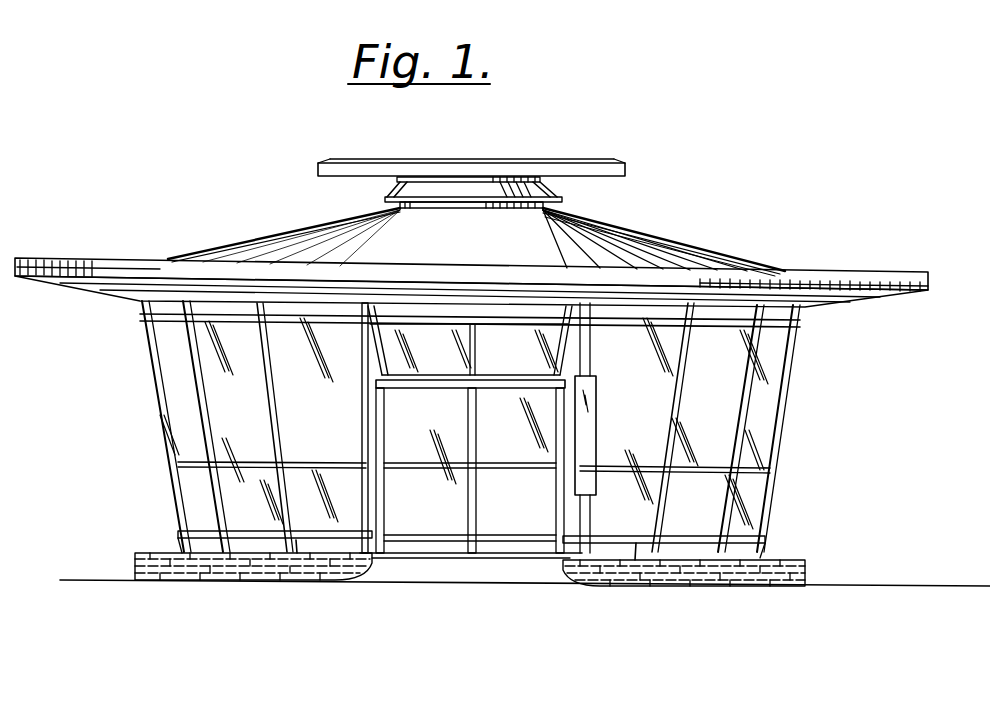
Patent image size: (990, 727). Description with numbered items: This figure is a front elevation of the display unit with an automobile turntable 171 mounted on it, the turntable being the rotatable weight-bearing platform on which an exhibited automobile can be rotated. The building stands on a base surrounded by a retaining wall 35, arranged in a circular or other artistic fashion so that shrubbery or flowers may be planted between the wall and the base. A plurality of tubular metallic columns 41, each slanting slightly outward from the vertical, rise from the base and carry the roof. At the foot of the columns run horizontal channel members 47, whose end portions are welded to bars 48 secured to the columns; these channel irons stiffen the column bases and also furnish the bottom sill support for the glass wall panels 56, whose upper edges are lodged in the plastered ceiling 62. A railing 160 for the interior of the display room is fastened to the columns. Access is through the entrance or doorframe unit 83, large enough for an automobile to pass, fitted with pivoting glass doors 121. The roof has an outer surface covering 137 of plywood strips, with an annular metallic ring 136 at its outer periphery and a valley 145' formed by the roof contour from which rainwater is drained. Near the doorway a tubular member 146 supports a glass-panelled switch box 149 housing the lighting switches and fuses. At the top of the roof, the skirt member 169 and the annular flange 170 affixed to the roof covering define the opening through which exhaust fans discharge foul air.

The retaining wall 35 is at (805, 567).
The tubular metallic column 41 is at (162, 373).
The horizontal channel member 47 is at (295, 553).
The bar 48 is at (180, 540).
The glass wall panel 56 is at (796, 428).
The plastered ceiling 62 is at (845, 303).
The entrance or doorframe unit 83 is at (467, 428).
The glass door 121 is at (510, 552).
The annular metallic ring 136 is at (960, 258).
The outer surface covering 137 is at (652, 240).
The valley 145' is at (471, 252).
The tubular member 146 is at (588, 525).
The switch box 149 is at (597, 428).
The railing 160 is at (185, 468).
The skirt member 169 is at (553, 186).
The annular flange 170 is at (400, 203).
The automobile turntable 171 is at (538, 158).